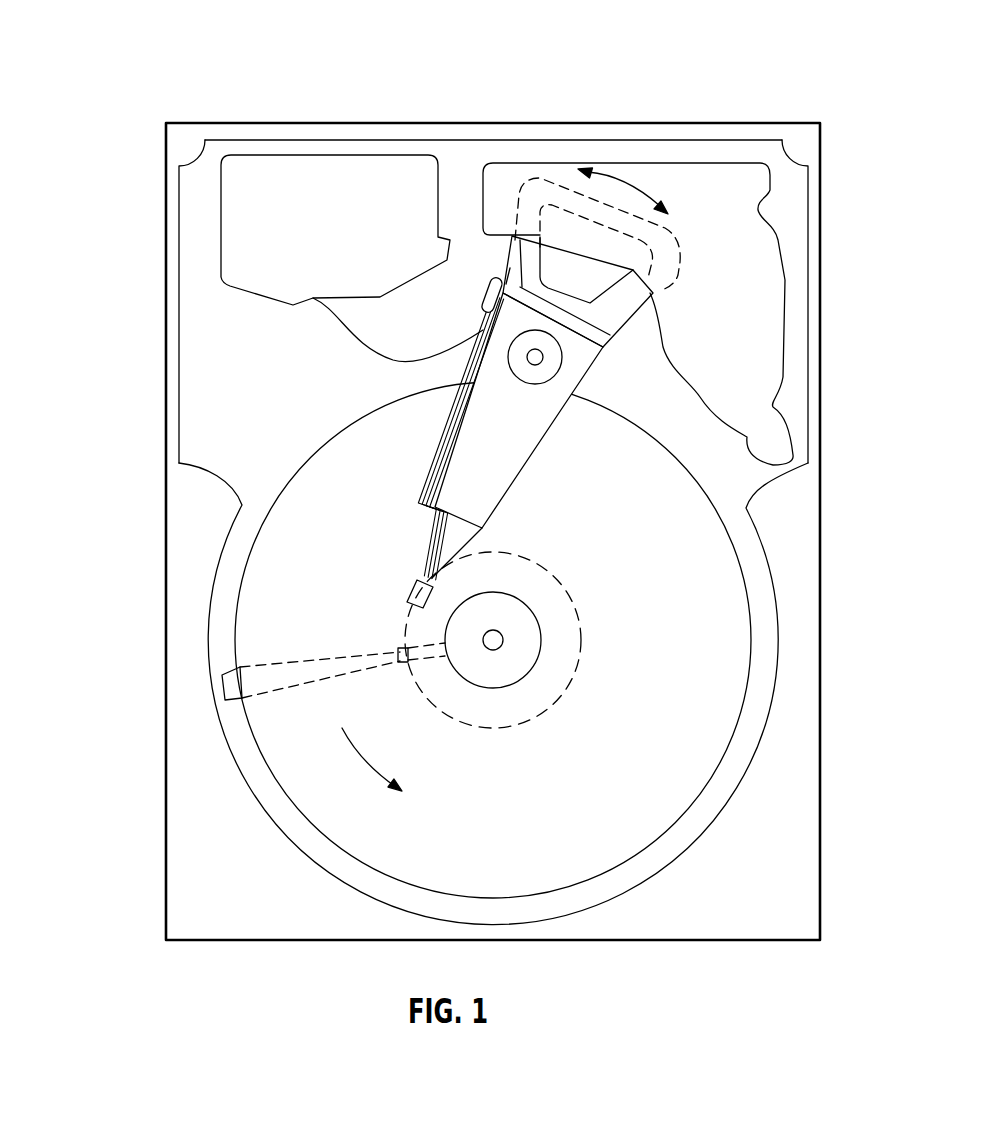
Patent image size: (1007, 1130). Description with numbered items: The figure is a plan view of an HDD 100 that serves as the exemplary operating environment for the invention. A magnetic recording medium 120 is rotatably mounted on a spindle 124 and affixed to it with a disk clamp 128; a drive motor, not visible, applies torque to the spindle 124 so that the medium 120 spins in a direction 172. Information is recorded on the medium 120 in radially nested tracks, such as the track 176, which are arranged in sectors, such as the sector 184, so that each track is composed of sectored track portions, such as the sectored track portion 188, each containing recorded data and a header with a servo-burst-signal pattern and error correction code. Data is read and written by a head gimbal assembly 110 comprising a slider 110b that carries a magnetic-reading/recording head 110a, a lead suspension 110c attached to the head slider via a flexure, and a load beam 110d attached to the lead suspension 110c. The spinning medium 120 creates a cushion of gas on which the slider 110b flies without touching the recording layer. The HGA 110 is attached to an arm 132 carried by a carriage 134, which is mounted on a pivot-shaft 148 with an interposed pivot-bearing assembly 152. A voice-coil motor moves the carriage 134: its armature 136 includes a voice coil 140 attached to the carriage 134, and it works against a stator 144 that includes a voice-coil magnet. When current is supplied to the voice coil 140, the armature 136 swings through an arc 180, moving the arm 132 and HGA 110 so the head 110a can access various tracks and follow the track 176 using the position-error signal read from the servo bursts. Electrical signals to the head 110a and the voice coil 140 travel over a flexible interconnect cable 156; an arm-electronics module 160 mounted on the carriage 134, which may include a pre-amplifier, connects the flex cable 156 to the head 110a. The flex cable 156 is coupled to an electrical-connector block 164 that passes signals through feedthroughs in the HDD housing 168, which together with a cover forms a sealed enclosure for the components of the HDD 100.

The HDD 100 is at (106, 44).
The head gimbal assembly 110 is at (70, 403).
The magnetic-reading/recording head 110a is at (408, 605).
The slider 110b is at (410, 590).
The lead suspension 110c is at (425, 553).
The load beam 110d is at (445, 530).
The magnetic recording medium 120 is at (745, 600).
The spindle 124 is at (505, 673).
The disk clamp 128 is at (497, 643).
The arm 132 is at (482, 480).
The carriage 134 is at (560, 390).
The armature 136 is at (512, 270).
The voice coil 140 is at (535, 253).
The stator 144 is at (750, 262).
The pivot-shaft 148 is at (537, 362).
The pivot-bearing assembly 152 is at (550, 368).
The flexible interconnect cable 156 is at (330, 303).
The arm-electronics module 160 is at (482, 332).
The electrical-connector block 164 is at (243, 220).
The HDD housing 168 is at (810, 135).
The direction 172 is at (367, 760).
The track 176 is at (580, 608).
The arc 180 is at (627, 183).
The sector 184 is at (222, 690).
The sectored track portion 188 is at (400, 655).